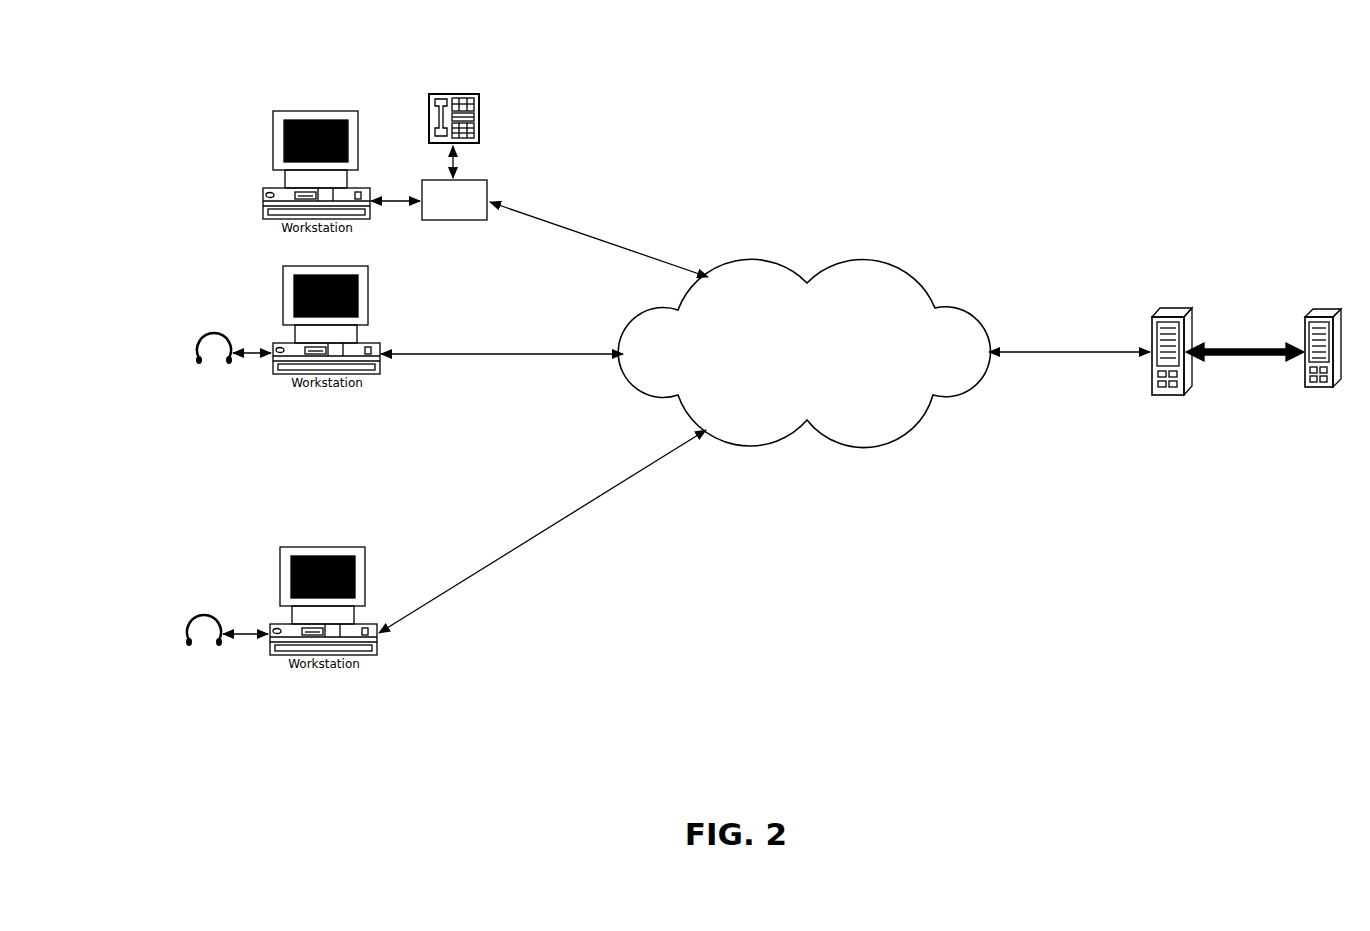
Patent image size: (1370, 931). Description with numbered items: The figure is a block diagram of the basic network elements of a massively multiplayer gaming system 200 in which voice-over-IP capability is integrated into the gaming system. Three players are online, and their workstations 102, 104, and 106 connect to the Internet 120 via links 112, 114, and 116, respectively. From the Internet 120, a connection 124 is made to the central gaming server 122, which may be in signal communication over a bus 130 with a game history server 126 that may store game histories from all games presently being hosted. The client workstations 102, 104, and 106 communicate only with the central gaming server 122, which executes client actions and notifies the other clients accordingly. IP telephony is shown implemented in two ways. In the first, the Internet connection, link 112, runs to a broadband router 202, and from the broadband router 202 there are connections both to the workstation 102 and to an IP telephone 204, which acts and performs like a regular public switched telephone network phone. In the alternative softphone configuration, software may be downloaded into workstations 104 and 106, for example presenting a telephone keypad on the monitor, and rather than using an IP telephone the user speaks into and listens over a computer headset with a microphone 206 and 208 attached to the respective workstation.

The workstation 102 is at (318, 110).
The workstation 104 is at (283, 270).
The workstation 106 is at (280, 568).
The link 112 is at (599, 239).
The link 114 is at (502, 340).
The link 116 is at (542, 531).
The Internet 120 is at (848, 394).
The central gaming server 122 is at (1172, 311).
The connection 124 is at (1080, 350).
The game history server 126 is at (1323, 312).
The bus 130 is at (1240, 347).
The MMP gaming system 200 is at (828, 131).
The broadband router 202 is at (487, 180).
The IP telephone 204 is at (481, 118).
The computer headset with microphone 206 is at (197, 353).
The computer headset with microphone 208 is at (188, 632).